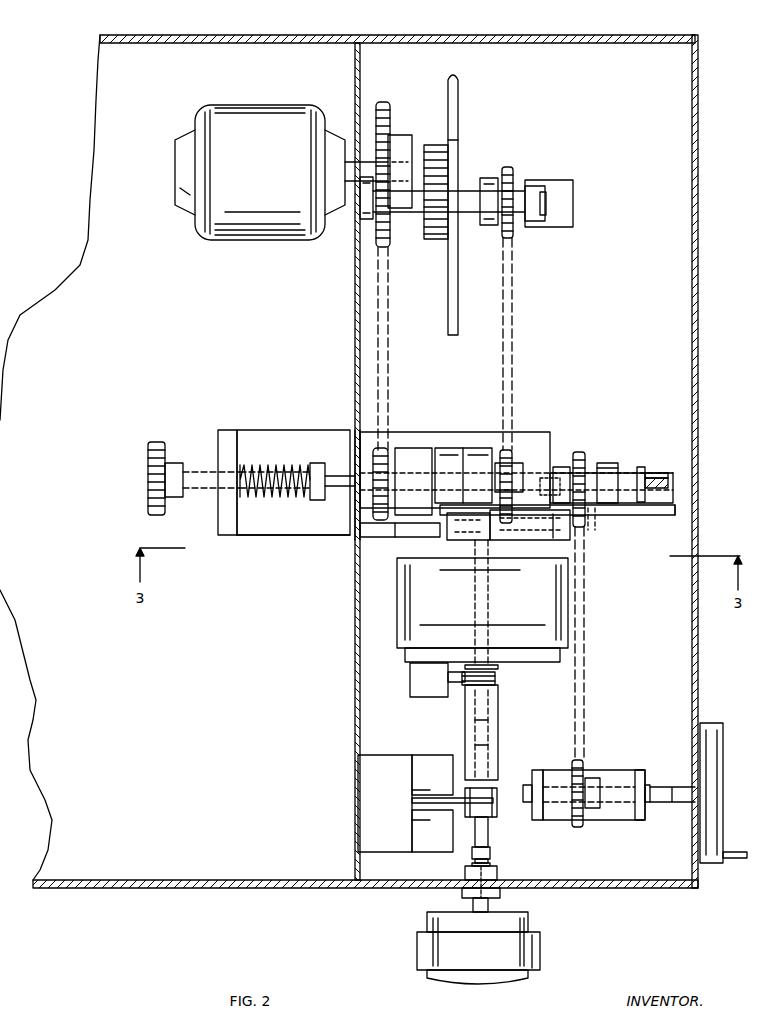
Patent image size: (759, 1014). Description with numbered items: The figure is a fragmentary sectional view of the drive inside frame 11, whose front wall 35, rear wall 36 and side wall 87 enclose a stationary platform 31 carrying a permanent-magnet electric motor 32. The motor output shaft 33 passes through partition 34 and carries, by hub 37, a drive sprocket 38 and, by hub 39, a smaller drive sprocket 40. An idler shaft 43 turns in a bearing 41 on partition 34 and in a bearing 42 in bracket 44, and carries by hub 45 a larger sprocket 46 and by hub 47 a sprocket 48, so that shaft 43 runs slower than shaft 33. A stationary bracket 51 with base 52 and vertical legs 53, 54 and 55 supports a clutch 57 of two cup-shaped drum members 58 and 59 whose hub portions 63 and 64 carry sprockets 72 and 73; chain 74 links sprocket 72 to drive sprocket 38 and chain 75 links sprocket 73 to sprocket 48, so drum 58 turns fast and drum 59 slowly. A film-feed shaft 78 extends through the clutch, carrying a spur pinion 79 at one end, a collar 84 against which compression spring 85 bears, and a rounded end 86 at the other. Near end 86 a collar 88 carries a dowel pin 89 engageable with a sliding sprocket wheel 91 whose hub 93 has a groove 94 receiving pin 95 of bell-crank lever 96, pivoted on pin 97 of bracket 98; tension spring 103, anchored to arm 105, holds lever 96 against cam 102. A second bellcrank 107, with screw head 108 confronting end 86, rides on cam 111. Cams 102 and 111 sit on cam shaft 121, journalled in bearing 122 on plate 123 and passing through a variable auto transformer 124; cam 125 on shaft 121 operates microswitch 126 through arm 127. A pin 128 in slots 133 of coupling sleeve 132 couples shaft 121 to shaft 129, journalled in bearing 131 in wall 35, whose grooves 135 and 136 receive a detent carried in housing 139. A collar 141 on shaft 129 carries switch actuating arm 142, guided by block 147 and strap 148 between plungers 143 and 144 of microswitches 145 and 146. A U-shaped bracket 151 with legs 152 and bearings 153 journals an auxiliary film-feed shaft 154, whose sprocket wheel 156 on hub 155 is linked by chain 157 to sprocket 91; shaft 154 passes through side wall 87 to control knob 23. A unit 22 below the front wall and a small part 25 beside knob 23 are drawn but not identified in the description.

The frame 11 is at (159, 890).
The motor 22 is at (542, 946).
The crank or control knob 23 is at (722, 770).
The pin 25 is at (736, 852).
The shelf or platform 31 is at (205, 677).
The electric motor 32 is at (248, 167).
The armature or output shaft 33 is at (354, 160).
The wall or partition 34 is at (353, 326).
The front wall 35 is at (300, 889).
The rear wall 36 is at (438, 35).
The hub 37 is at (398, 135).
The drive sprocket 38 is at (385, 104).
The hub 39 is at (434, 145).
The drive sprocket 40 is at (455, 140).
The bearing 41 is at (364, 220).
The bearing 42 is at (533, 221).
The idler shaft 43 is at (462, 190).
The bracket 44 is at (574, 208).
The hub 45 is at (430, 238).
The sprocket 46 is at (460, 102).
The hub 47 is at (490, 178).
The sprocket 48 is at (510, 168).
The bracket 51 is at (275, 430).
The base 52 is at (272, 535).
The leg 53 is at (230, 430).
The leg 54 is at (540, 432).
The leg 55 is at (354, 440).
The clutch 57 is at (446, 446).
The drum member 58 is at (426, 448).
The drum member 59 is at (470, 448).
The hub portion 63 is at (403, 448).
The hub portion 64 is at (497, 463).
The sprocket 72 is at (382, 448).
The sprocket 73 is at (507, 450).
The chain 74 is at (388, 360).
The chain 75 is at (513, 328).
The film-feed shaft 78 is at (323, 464).
The spur pinion 79 is at (158, 442).
The collar 84 is at (318, 500).
The compression spring 85 is at (290, 465).
The rounded end or head 86 is at (642, 467).
The side wall 87 is at (699, 488).
The collar 88 is at (610, 463).
The dowel pin 89 is at (608, 512).
The sprocket wheel 91 is at (586, 456).
The hub 93 is at (578, 452).
The groove 94 is at (562, 467).
The pin 95 is at (553, 540).
The bell-crank lever 96 is at (515, 540).
The pin 97 is at (592, 532).
The bracket 98 is at (670, 515).
The cam 102 is at (465, 540).
The tension spring 103 is at (418, 537).
The arm 105 is at (388, 537).
The bellcrank lever 107 is at (672, 495).
The screw head 108 is at (655, 473).
The cam 111 is at (548, 450).
The cam shaft 121 is at (492, 556).
The bearing 122 is at (500, 668).
The plate 123 is at (560, 656).
The variable auto transformer 124 is at (438, 605).
The cam 125 is at (497, 681).
The microswitch 126 is at (410, 680).
The arm 127 is at (458, 683).
The pin 128 is at (465, 720).
The shaft 129 is at (490, 850).
The bearing 131 is at (497, 872).
The coupling sleeve 132 is at (498, 745).
The slots 133 is at (465, 735).
The groove 135 is at (471, 866).
The groove 136 is at (474, 860).
The housing 139 is at (490, 878).
The collar 141 is at (497, 805).
The switch actuating arm 142 is at (414, 800).
The plunger 143 is at (412, 820).
The plunger 144 is at (414, 790).
The microswitch 145 is at (422, 847).
The microswitch 146 is at (422, 784).
The block 147 is at (373, 809).
The strap 148 is at (488, 832).
The bracket 151 is at (615, 770).
The legs 152 is at (540, 820).
The bearings 153 is at (528, 785).
The auxiliary film-feed shaft 154 is at (670, 803).
The hub portion 155 is at (596, 808).
The sprocket wheel 156 is at (584, 762).
The chain 157 is at (584, 692).